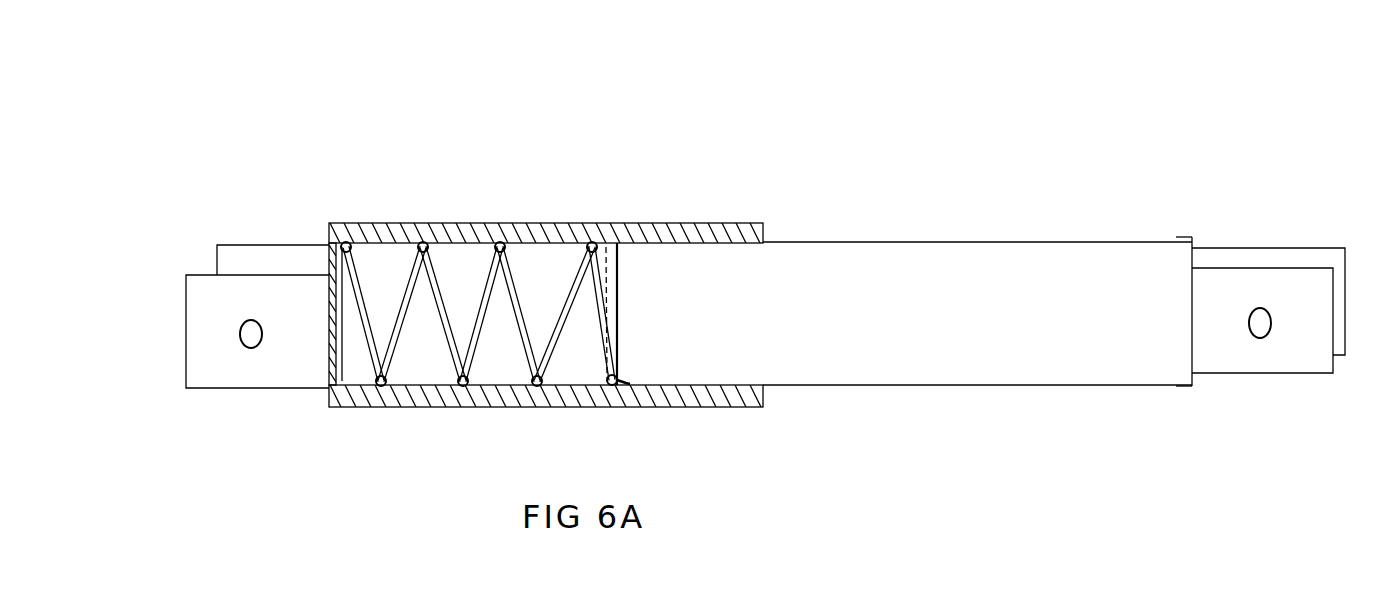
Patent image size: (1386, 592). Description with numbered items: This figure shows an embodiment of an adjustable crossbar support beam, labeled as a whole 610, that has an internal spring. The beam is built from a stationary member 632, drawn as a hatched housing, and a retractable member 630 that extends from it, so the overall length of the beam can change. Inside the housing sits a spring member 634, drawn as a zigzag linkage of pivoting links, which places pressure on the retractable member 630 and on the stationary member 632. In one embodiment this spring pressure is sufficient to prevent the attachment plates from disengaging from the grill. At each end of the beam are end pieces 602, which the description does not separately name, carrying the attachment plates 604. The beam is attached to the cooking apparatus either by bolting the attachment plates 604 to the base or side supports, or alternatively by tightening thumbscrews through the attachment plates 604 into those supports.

The mounting tab / end bracket 602 is at (185, 302).
The attachment plates 604 is at (252, 345).
The spring-loaded telescoping strut assembly 610 is at (910, 152).
The retractable member 630 is at (818, 386).
The stationary member 632 is at (648, 221).
The spring member 634 is at (432, 263).